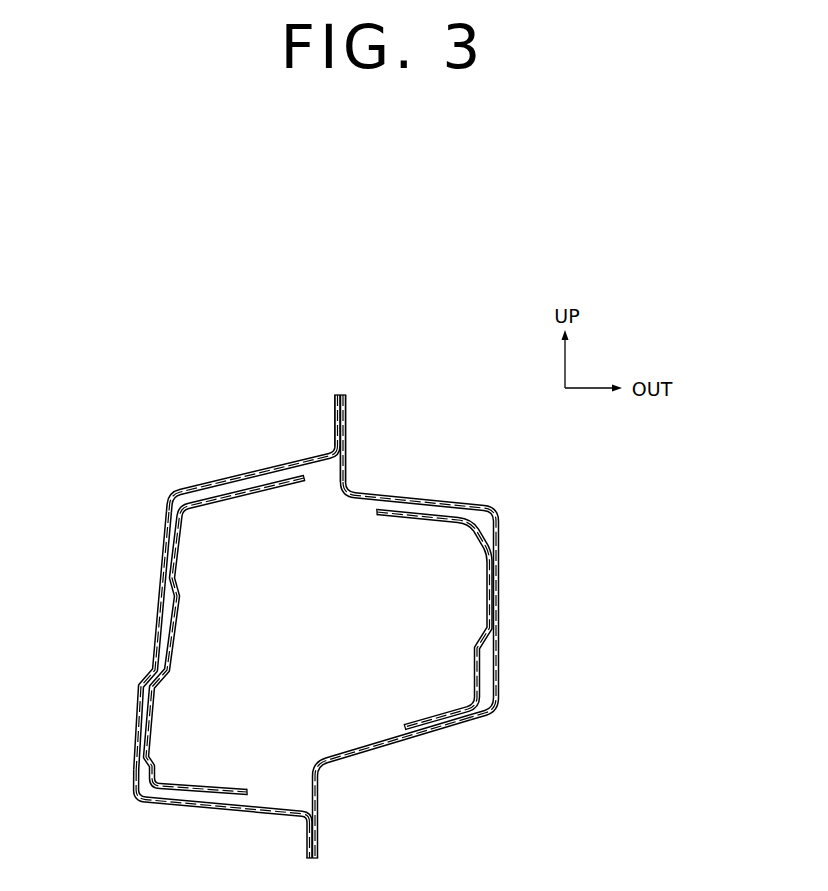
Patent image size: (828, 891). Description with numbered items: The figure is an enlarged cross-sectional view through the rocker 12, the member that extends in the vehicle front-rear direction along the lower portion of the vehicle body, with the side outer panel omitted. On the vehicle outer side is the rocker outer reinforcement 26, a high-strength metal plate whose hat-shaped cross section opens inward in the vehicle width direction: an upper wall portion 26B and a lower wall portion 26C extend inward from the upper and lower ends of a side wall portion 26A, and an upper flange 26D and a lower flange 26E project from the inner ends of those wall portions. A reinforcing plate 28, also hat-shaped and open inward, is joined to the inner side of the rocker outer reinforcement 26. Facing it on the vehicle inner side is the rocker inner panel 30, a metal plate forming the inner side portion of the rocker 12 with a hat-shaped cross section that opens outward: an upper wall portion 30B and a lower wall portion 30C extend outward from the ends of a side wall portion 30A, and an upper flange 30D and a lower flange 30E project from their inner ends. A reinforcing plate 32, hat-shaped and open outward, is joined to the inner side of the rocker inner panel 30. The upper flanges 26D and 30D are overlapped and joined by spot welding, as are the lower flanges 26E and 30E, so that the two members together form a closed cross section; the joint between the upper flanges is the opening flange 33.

The rocker 12 is at (329, 584).
The rocker outer reinforcement 26 is at (456, 605).
The side wall portion 26A is at (502, 537).
The upper wall portion 26B is at (413, 502).
The lower wall portion 26C is at (400, 747).
The upper flange 26D is at (348, 420).
The lower flange 26E is at (318, 830).
The reinforcing plate 28 is at (474, 662).
The rocker inner panel 30 is at (199, 607).
The side wall portion 30A is at (160, 600).
The upper wall portion 30B is at (244, 472).
The lower wall portion 30C is at (197, 808).
The upper flange 30D is at (333, 421).
The lower flange 30E is at (307, 837).
The reinforcing plate 32 is at (177, 634).
The opening flange 33 is at (412, 345).